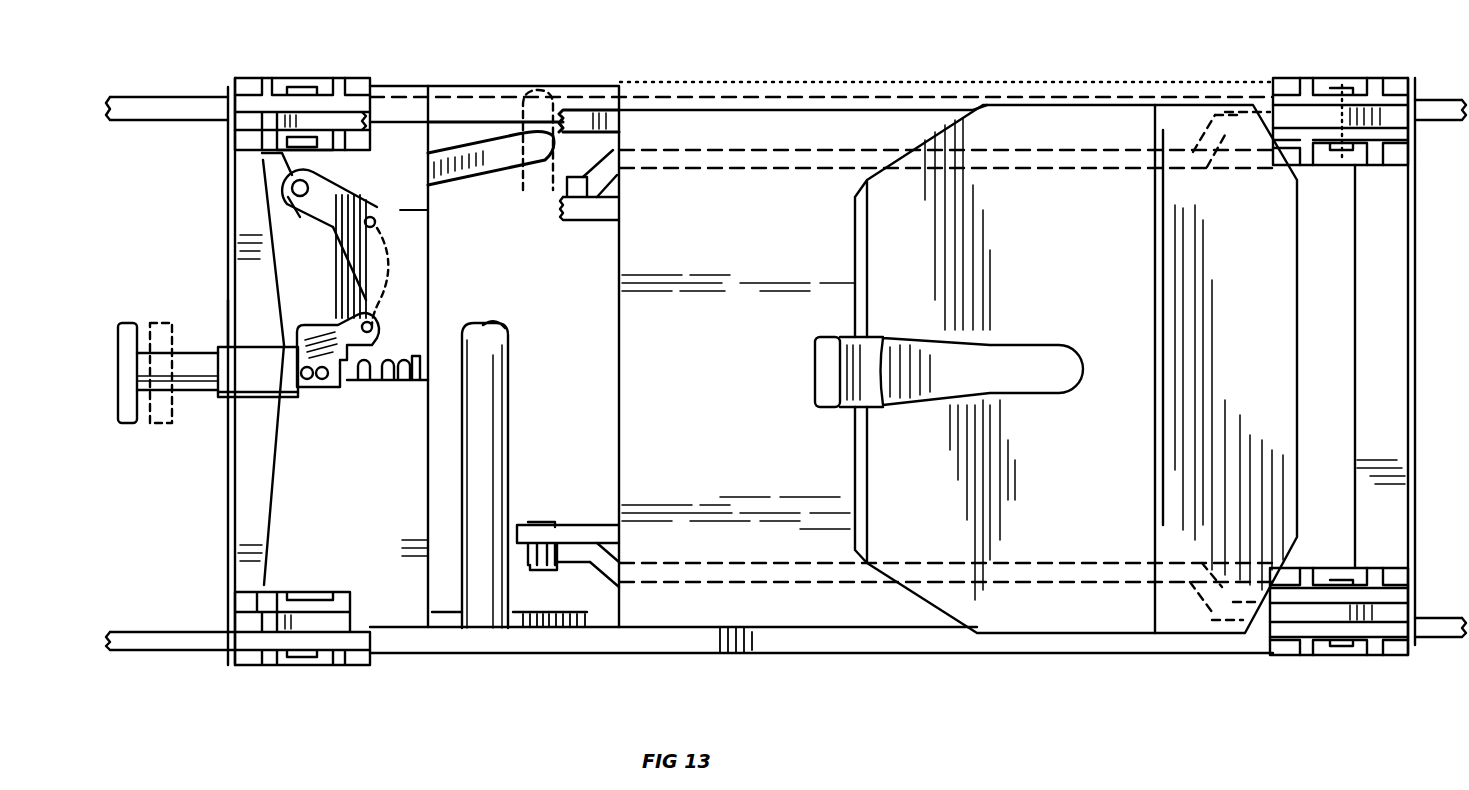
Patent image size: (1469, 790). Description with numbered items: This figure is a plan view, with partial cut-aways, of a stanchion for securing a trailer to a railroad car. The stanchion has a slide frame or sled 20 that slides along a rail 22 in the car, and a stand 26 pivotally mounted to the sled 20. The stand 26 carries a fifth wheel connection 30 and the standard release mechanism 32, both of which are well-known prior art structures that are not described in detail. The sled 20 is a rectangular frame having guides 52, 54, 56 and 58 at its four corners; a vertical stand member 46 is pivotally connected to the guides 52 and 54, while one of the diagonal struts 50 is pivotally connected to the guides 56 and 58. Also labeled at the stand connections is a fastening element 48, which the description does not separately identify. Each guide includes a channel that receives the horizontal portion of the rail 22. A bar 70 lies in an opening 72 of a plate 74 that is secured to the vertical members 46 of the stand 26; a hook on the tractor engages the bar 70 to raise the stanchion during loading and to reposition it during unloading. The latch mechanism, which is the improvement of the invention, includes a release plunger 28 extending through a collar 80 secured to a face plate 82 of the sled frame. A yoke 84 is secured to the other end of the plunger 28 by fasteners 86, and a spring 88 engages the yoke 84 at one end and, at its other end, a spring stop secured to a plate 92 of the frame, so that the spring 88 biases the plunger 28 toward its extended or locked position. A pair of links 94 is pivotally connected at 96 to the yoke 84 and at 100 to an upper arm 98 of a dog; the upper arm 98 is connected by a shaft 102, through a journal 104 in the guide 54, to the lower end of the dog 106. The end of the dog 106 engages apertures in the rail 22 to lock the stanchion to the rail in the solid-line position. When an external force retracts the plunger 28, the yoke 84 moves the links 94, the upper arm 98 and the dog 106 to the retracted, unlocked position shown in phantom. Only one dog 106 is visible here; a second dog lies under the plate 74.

The slide frame 20 is at (235, 549).
The rail 22 is at (172, 104).
The stand 26 is at (772, 82).
The plunger 28 is at (133, 320).
The fifth wheel connection 30 is at (1103, 611).
The release mechanism 32 is at (815, 372).
The vertical stand member 46 is at (345, 118).
The bolt 48 is at (592, 212).
The diagonal strut 50 is at (617, 177).
The guide 52 is at (252, 660).
The guide 54 is at (250, 82).
The guide 56 is at (1358, 648).
The guide 58 is at (1395, 82).
The bar 70 is at (490, 472).
The opening 72 is at (615, 438).
The plate 74 is at (358, 472).
The collar 80 is at (222, 347).
The face plate 82 is at (226, 300).
The yoke 84 is at (325, 327).
The fasteners 86 is at (312, 380).
The spring 88 is at (372, 382).
The plate 92 is at (428, 207).
The links 94 is at (345, 287).
The pivot 96 is at (355, 315).
The upper arm 98 is at (329, 220).
The pivot 100 is at (382, 232).
The shaft 102 is at (296, 202).
The journal 104 is at (290, 186).
The dog 106 is at (490, 163).